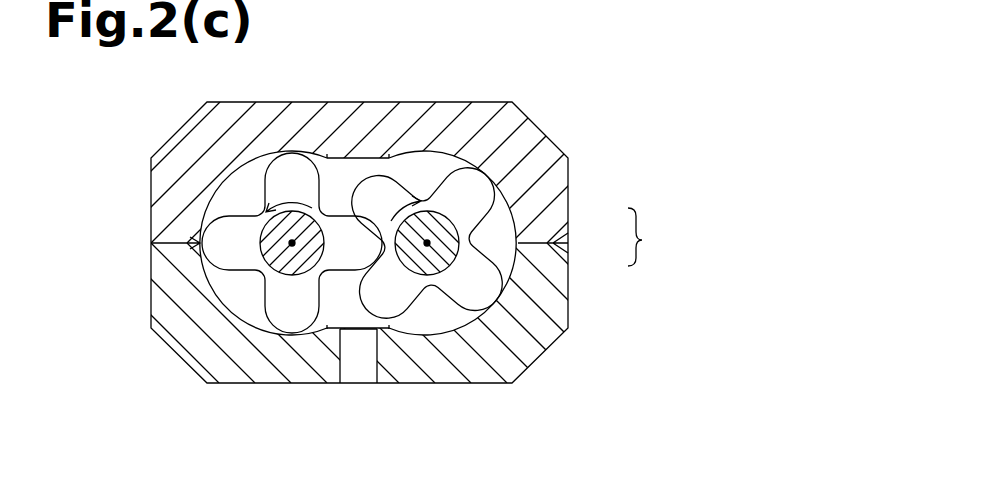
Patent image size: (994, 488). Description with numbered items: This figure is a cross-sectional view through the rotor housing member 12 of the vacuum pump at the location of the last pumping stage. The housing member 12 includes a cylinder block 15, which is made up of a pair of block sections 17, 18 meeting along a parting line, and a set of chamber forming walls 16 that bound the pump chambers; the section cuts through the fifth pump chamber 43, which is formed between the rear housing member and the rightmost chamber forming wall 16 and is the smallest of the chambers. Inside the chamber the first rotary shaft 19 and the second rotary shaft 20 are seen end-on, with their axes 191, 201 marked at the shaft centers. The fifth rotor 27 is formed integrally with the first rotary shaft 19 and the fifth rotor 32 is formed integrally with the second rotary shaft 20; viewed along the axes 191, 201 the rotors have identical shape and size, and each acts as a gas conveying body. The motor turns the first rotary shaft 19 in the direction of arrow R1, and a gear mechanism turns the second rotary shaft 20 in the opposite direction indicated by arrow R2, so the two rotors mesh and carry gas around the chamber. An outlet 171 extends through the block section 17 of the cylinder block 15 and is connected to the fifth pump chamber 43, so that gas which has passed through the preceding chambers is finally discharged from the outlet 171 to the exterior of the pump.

The rotor housing member 12 is at (513, 103).
The cylinder block 15 is at (654, 237).
The chamber forming wall 16 is at (503, 270).
The block section 17 is at (566, 260).
The block section 18 is at (566, 215).
The first rotary shaft 19 is at (418, 256).
The axis of the first rotary shaft 191 is at (434, 230).
The second rotary shaft 20 is at (291, 275).
The axis of the second rotary shaft 201 is at (279, 238).
The fifth rotor 27 is at (457, 293).
The fifth rotor 32 is at (267, 303).
The fifth pump chamber 43 is at (350, 197).
The outlet 171 is at (378, 368).
The rotation direction of the first rotary shaft R1 is at (418, 202).
The rotation direction of the second rotary shaft R2 is at (291, 199).